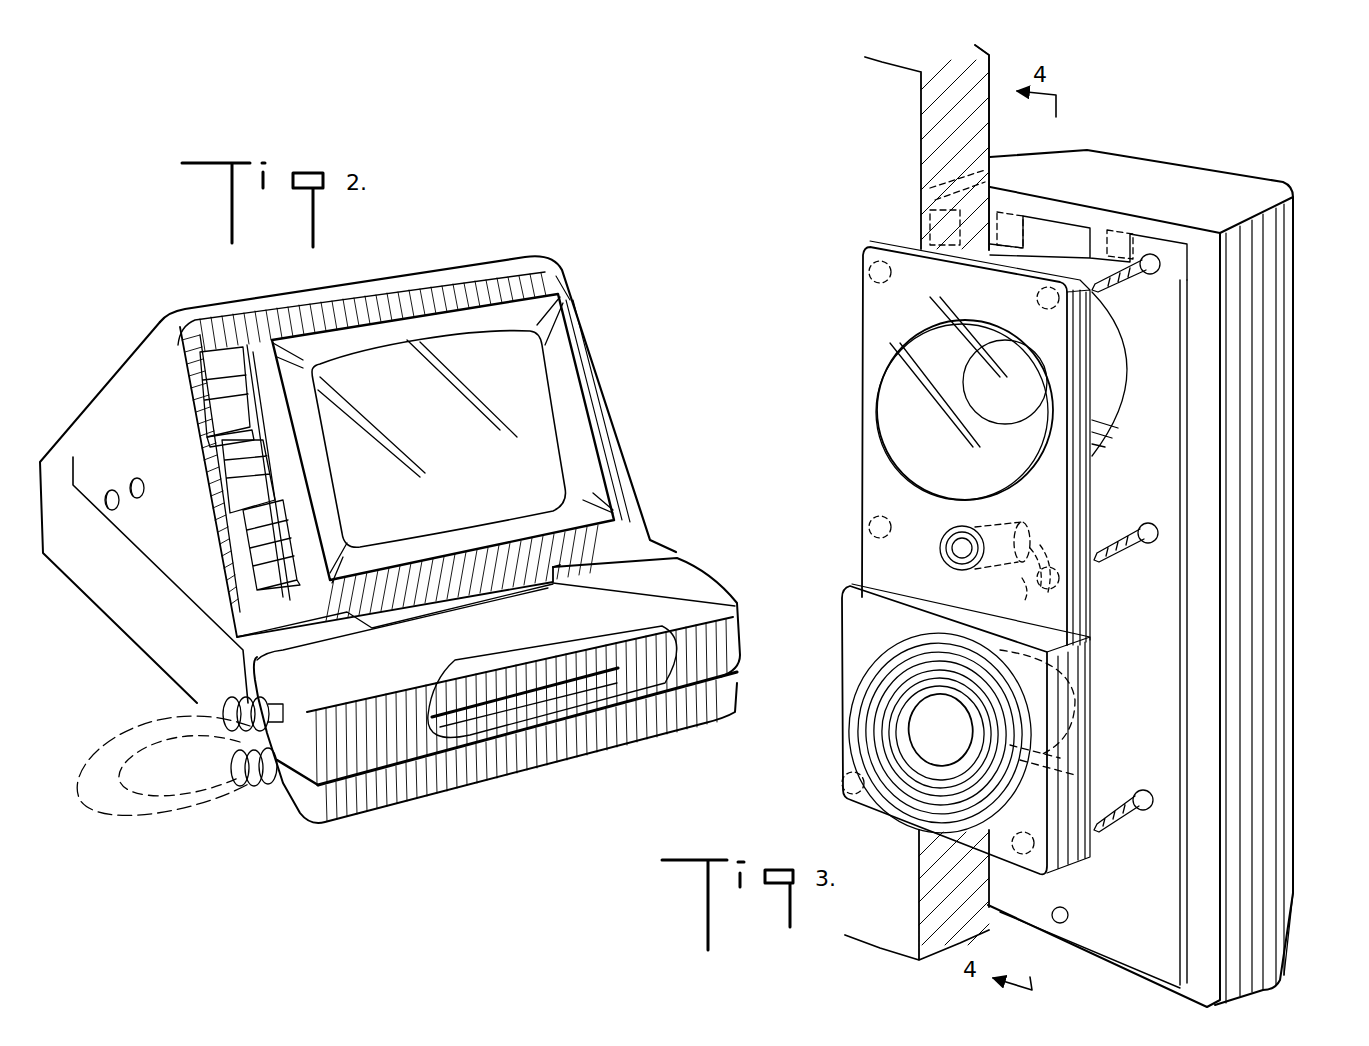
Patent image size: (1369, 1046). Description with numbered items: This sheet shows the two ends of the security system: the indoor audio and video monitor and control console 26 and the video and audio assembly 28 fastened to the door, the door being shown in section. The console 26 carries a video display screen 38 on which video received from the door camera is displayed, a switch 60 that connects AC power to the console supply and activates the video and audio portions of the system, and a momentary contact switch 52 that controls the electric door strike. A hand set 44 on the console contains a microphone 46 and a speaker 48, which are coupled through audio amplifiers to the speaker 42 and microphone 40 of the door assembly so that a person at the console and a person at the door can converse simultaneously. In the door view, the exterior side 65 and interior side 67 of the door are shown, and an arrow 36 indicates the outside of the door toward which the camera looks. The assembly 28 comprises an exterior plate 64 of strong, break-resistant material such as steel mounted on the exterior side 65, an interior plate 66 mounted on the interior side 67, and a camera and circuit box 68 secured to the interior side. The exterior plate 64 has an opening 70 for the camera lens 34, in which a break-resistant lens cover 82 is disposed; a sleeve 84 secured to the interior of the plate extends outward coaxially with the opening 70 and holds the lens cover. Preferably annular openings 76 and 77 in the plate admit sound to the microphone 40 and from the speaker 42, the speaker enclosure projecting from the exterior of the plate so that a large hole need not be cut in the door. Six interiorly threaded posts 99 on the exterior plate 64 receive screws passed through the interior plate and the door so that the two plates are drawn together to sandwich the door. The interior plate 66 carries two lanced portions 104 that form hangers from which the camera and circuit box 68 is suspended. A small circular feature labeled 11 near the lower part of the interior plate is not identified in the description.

In FIG. 2, the audio and video monitor and control console 26 is at (516, 252).
In FIG. 2, the video display screen 38 is at (533, 400).
In FIG. 2, the switch 60 is at (223, 417).
In FIG. 2, the momentary contact switch 52 is at (243, 513).
In FIG. 2, the hand set 44 is at (722, 573).
In FIG. 2, the speaker 48 is at (725, 658).
In FIG. 2, the microphone 46 is at (357, 757).
In FIG. 3, the exterior side of the door 65 is at (893, 140).
In FIG. 3, the interior side of the door 67 is at (993, 141).
In FIG. 3, the outside of the door 36 is at (897, 192).
In FIG. 3, the video and audio assembly 28 is at (1312, 210).
In FIG. 3, the camera and circuit box 68 is at (1235, 196).
In FIG. 3, the interior plate 66 is at (1166, 492).
In FIG. 3, the lanced portions 104 is at (1140, 230).
In FIG. 3, the exterior plate 64 is at (880, 303).
In FIG. 3, the opening 70 is at (890, 425).
In FIG. 3, the lens 34 is at (990, 405).
In FIG. 3, the lens cover 82 is at (910, 350).
In FIG. 3, the sleeve 84 is at (1107, 427).
In FIG. 3, the opening 76 is at (950, 558).
In FIG. 3, the microphone 40 is at (966, 520).
In FIG. 3, the opening 77 is at (890, 653).
In FIG. 3, the speaker 42 is at (1037, 698).
In FIG. 3, the interiorly threaded posts 99 is at (1100, 832).
In FIG. 3, the mounting hole 11 is at (1068, 913).